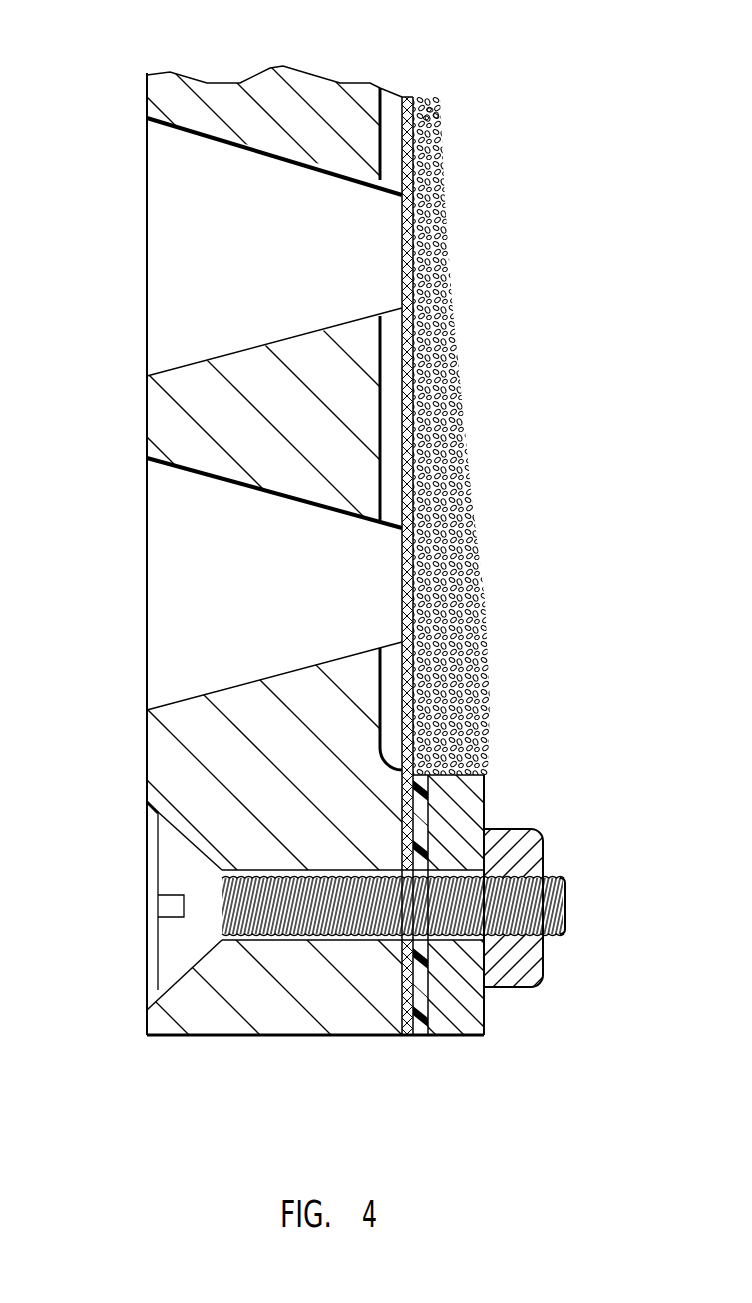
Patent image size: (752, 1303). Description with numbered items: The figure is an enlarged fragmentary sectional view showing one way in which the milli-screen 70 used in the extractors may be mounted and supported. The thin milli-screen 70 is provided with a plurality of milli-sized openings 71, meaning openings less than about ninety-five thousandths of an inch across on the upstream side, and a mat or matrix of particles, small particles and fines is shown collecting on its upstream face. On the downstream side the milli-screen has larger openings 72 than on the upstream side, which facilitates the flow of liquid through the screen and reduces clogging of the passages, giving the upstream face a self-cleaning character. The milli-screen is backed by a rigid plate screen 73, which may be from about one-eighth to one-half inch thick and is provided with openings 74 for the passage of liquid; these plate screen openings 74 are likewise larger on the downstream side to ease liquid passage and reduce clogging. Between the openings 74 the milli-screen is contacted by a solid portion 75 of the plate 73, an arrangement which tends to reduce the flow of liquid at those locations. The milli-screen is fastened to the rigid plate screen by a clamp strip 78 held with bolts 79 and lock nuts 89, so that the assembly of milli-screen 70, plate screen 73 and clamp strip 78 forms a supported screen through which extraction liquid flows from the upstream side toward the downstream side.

The milli-screen 70 is at (414, 100).
The milli-sized openings 71 is at (433, 107).
The larger openings 72 is at (404, 100).
The rigid plate screen 73 is at (147, 414).
The openings 74 is at (176, 217).
The solid portion 75 is at (402, 528).
The clamp strip 78 is at (485, 800).
The bolts 79 is at (178, 925).
The lock nuts 89 is at (525, 987).